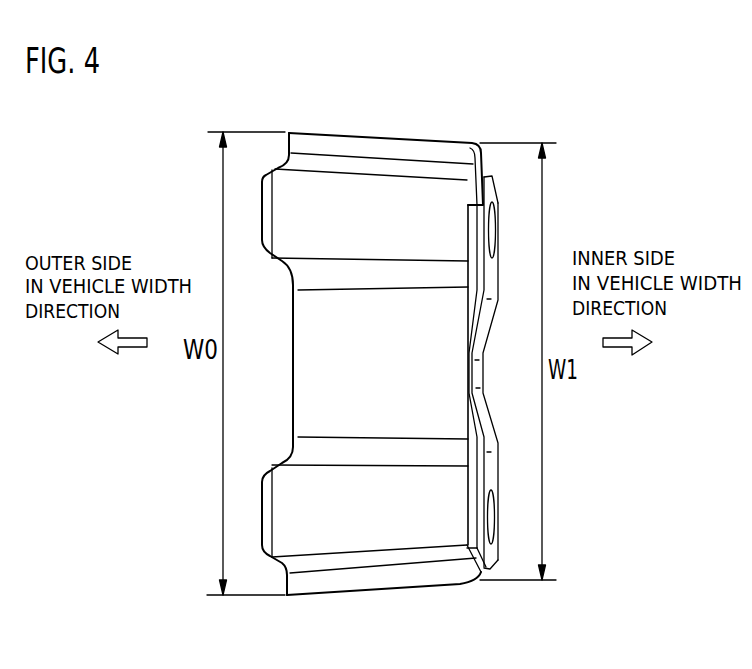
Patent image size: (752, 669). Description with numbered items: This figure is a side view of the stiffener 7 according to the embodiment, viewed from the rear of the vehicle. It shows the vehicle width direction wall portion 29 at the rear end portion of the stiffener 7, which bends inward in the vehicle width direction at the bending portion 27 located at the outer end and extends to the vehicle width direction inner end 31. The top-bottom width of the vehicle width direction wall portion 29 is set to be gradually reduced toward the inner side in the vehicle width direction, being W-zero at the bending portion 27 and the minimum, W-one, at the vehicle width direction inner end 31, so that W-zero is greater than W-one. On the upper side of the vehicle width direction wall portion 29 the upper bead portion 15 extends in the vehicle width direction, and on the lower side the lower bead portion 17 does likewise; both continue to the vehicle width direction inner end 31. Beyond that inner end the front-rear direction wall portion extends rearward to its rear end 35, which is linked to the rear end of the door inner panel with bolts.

The stiffener 7 is at (390, 124).
The upper bead portion 15 is at (424, 208).
The lower bead portion 17 is at (345, 523).
The bending portion 27 is at (292, 361).
The vehicle width direction wall portion 29 is at (392, 381).
The vehicle width direction inner end 31 is at (461, 582).
The rear end 35 is at (490, 477).